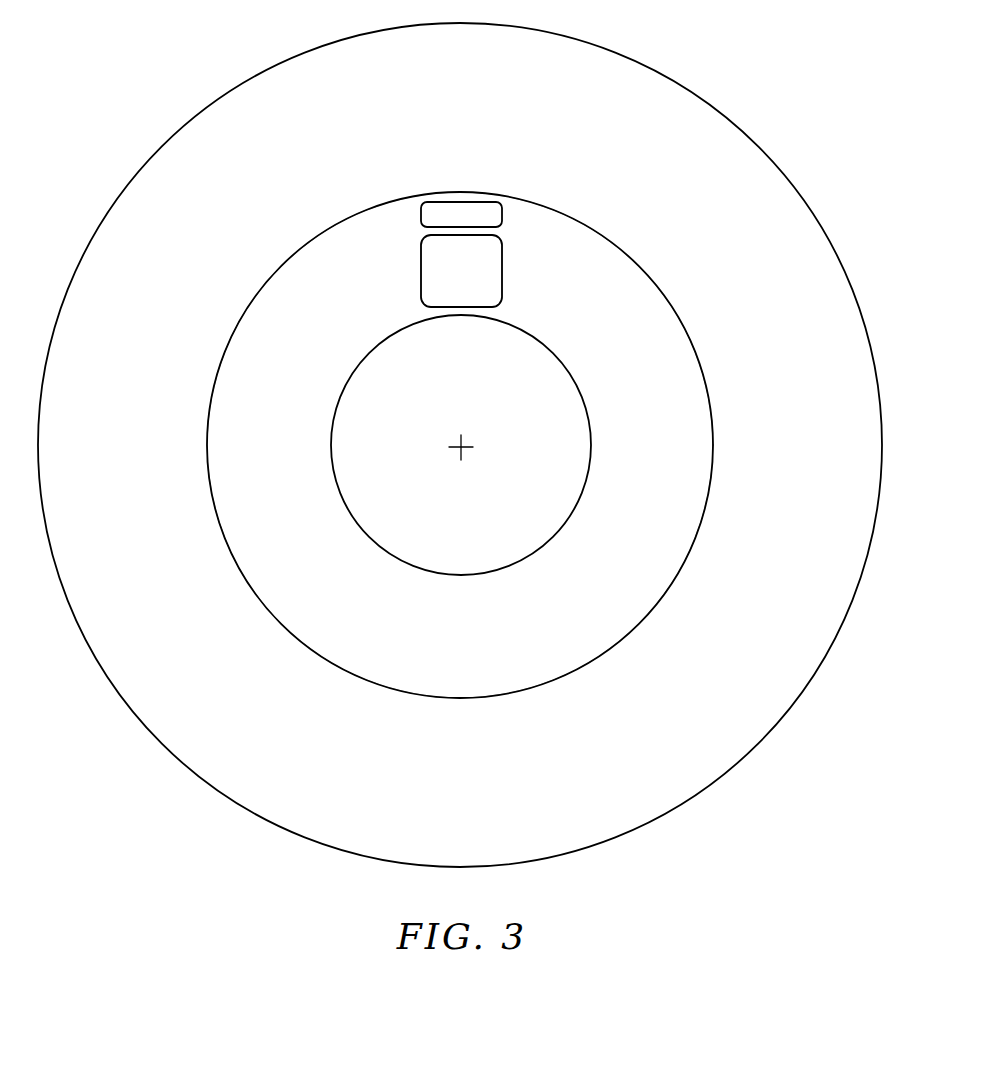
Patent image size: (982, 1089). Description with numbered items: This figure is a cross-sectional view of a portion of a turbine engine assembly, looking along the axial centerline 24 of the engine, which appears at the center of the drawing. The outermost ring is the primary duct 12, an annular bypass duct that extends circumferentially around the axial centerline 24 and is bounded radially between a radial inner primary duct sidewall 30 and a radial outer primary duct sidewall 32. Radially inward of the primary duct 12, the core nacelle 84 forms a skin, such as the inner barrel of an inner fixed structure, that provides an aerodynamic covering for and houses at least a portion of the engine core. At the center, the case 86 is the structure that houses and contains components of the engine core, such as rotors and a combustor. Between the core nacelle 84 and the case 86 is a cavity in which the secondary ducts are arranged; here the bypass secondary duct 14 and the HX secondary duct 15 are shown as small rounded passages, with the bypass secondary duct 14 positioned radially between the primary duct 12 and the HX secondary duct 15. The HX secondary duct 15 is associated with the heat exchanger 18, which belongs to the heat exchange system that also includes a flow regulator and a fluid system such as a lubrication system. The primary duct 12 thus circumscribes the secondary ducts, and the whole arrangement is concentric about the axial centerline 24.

The primary duct 12 is at (472, 106).
The bypass secondary duct 14 is at (483, 219).
The HX secondary duct 15 is at (473, 278).
The heat exchanger 18 is at (430, 287).
The axial centerline 24 is at (467, 451).
The primary duct sidewall 30 is at (353, 213).
The primary duct sidewall 32 is at (272, 70).
The core nacelle 84 is at (665, 290).
The case 86 is at (560, 362).